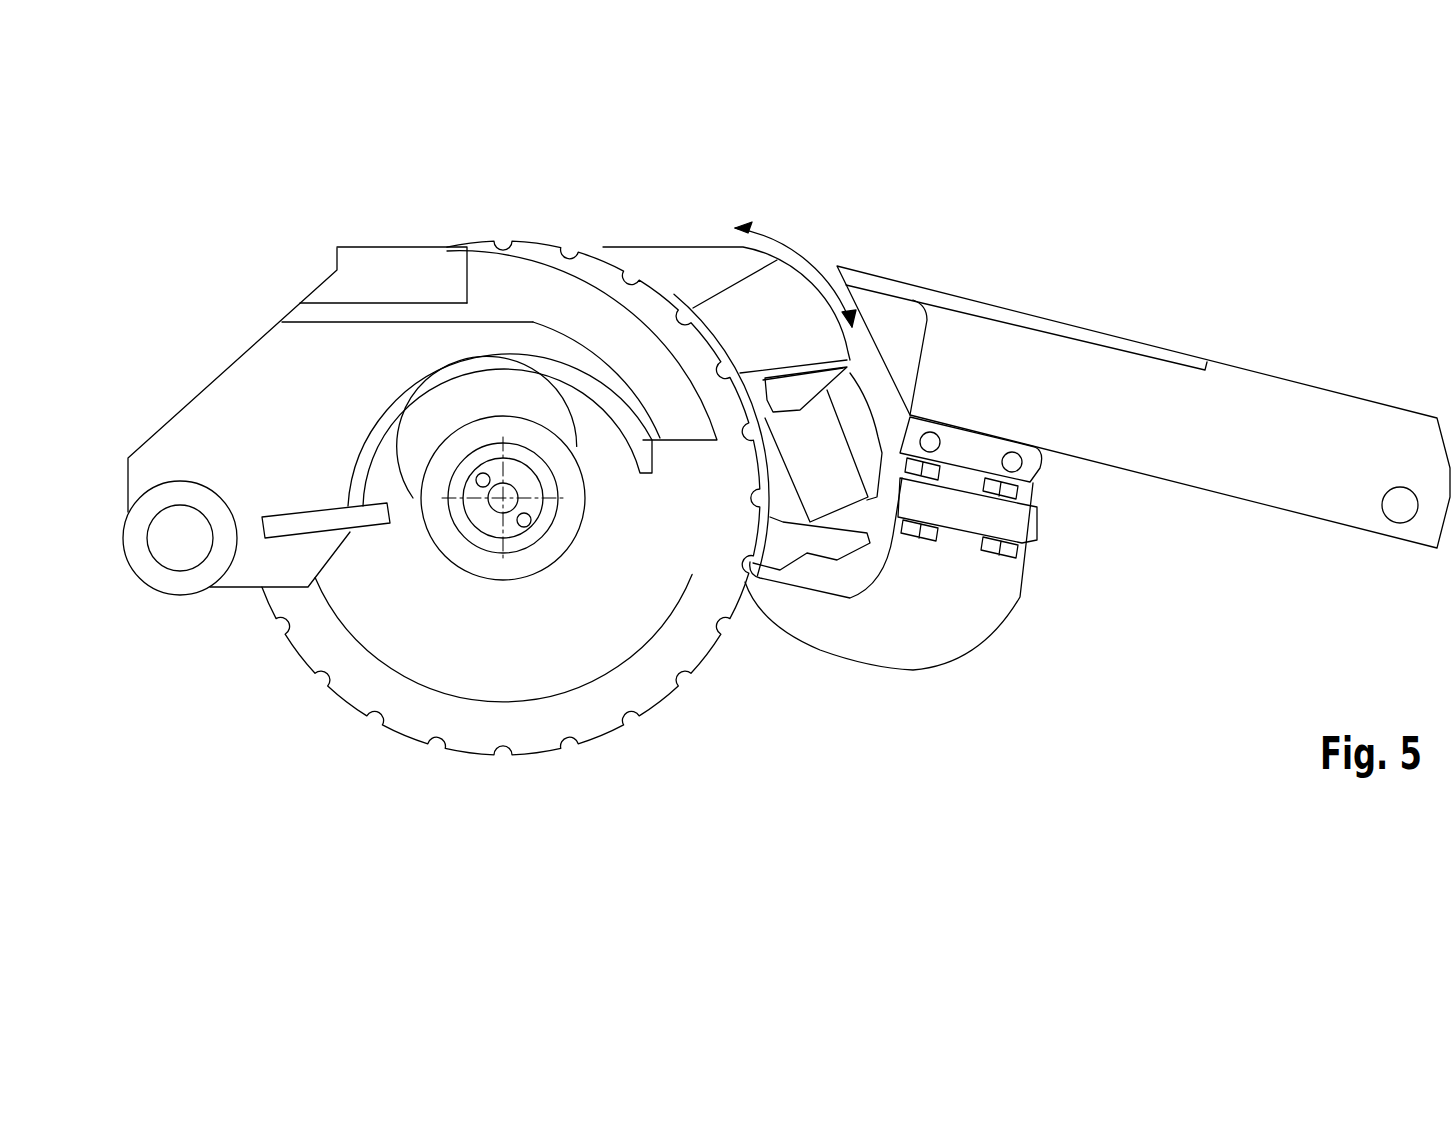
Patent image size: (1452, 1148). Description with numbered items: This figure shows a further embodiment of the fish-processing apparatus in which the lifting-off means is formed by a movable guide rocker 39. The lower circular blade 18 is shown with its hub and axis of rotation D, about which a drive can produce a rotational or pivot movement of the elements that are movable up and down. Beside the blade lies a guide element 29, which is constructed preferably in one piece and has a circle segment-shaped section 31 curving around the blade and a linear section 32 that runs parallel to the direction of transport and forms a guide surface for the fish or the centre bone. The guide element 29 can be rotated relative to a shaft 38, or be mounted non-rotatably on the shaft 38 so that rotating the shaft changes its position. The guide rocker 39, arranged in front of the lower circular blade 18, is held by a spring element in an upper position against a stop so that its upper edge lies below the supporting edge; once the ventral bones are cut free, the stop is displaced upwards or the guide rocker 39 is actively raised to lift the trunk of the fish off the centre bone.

The lower circular blade 18 is at (528, 740).
The axis of rotation D is at (513, 516).
The guide element 29 is at (253, 372).
The circle segment-shaped section 31 is at (542, 273).
The linear section 32 is at (383, 262).
The shaft 38 is at (167, 585).
The guide rocker 39 is at (822, 250).